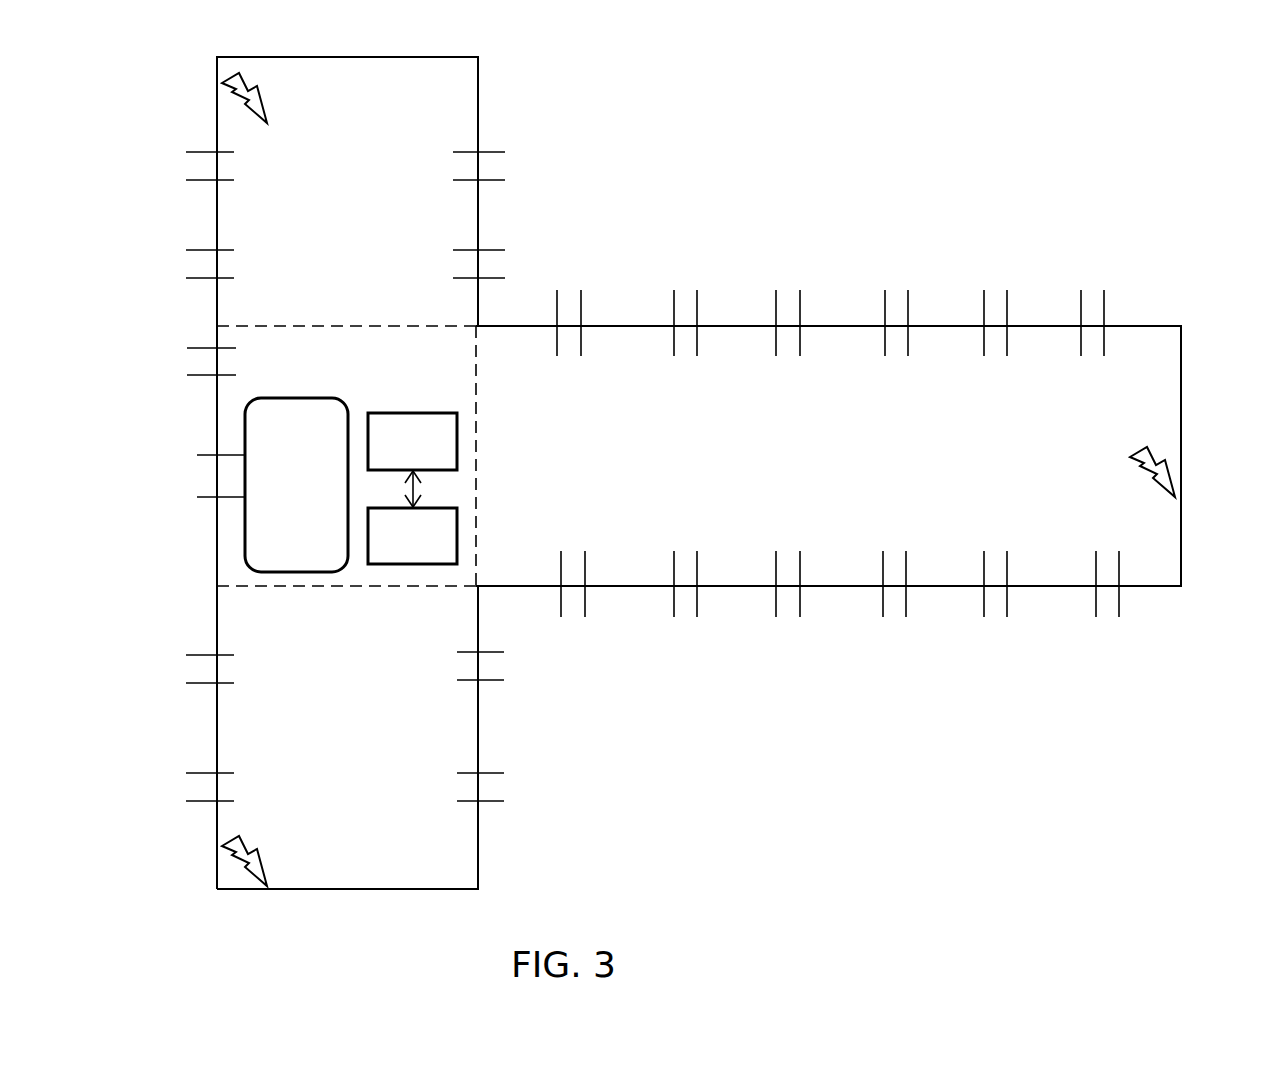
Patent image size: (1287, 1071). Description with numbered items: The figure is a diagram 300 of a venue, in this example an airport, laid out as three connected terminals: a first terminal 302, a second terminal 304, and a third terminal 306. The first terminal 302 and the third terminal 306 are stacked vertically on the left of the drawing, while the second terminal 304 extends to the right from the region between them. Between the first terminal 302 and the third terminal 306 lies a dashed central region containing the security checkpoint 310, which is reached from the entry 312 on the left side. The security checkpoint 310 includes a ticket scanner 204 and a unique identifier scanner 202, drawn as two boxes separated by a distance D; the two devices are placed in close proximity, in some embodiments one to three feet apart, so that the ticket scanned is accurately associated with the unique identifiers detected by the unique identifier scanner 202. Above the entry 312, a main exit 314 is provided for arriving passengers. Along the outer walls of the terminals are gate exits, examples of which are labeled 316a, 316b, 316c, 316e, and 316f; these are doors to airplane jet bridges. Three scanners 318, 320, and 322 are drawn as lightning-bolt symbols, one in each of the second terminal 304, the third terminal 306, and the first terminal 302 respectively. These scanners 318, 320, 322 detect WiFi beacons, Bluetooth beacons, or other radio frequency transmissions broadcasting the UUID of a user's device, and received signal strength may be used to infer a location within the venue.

The diagram of a venue 300 is at (990, 101).
The Terminal 1 302 is at (465, 122).
The Terminal 2 304 is at (1168, 423).
The Terminal 3 306 is at (465, 738).
The security checkpoint 310 is at (330, 418).
The entry 312 is at (213, 478).
The main exit 314 is at (193, 367).
The gate exit 316a is at (193, 163).
The gate exit 316b is at (194, 790).
The gate exit 316c is at (569, 310).
The gate exit 316e is at (786, 302).
The gate exit 316f is at (898, 308).
The scanner 318 is at (1130, 477).
The scanner 320 is at (251, 849).
The scanner 322 is at (262, 102).
The unique identifier scanner 202 is at (412, 536).
The ticket scanner 204 is at (412, 441).
The distance D is at (418, 491).